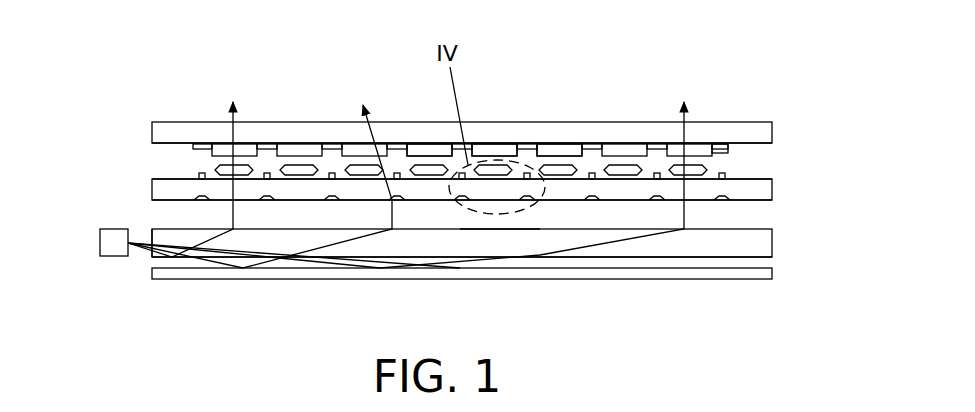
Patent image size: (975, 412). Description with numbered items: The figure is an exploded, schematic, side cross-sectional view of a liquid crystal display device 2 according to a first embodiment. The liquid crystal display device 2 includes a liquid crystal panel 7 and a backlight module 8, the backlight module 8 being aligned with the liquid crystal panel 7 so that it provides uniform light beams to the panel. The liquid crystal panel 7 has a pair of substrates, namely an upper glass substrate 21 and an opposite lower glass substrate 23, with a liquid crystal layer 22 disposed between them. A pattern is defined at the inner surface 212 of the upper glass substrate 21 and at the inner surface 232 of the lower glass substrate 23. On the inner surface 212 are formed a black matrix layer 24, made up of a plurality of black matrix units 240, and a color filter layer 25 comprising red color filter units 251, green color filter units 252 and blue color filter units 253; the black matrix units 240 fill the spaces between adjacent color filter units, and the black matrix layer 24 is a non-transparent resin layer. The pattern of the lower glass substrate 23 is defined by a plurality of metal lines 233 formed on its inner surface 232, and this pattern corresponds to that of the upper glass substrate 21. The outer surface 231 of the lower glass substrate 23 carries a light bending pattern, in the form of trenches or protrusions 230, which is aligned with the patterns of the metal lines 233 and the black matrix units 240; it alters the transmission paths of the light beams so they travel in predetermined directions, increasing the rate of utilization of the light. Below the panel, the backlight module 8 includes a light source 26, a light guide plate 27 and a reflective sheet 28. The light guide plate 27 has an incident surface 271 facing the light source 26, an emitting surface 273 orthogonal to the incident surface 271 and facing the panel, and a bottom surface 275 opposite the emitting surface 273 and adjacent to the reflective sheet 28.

The liquid crystal display device 2 is at (364, 30).
The liquid crystal panel 7 is at (152, 120).
The backlight module 8 is at (44, 175).
The upper glass substrate 21 is at (755, 133).
The inner surface of upper glass substrate 212 is at (182, 147).
The liquid crystal layer 22 is at (707, 169).
The lower glass substrate 23 is at (762, 190).
The protrusions of second substrate 230 is at (723, 200).
The outer surface of lower glass substrate 231 is at (770, 201).
The inner surface of lower glass substrate 232 is at (771, 177).
The metal lines 233 is at (656, 171).
The black matrix layer 24 is at (723, 146).
The black matrix units 240 is at (335, 148).
The color filter layer 25 is at (747, 150).
The red color filter units 251 is at (432, 150).
The green color filter units 252 is at (498, 150).
The blue color filter units 253 is at (562, 150).
The light source 26 is at (112, 240).
The light guide plate 27 is at (172, 240).
The incident surface 271 is at (147, 233).
The emitting surface 273 is at (499, 227).
The bottom surface 275 is at (769, 259).
The reflective sheet 28 is at (157, 274).